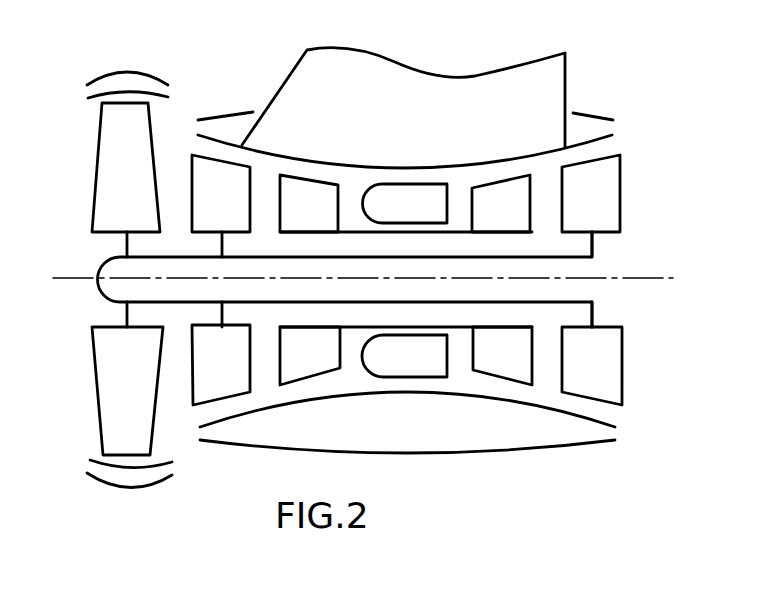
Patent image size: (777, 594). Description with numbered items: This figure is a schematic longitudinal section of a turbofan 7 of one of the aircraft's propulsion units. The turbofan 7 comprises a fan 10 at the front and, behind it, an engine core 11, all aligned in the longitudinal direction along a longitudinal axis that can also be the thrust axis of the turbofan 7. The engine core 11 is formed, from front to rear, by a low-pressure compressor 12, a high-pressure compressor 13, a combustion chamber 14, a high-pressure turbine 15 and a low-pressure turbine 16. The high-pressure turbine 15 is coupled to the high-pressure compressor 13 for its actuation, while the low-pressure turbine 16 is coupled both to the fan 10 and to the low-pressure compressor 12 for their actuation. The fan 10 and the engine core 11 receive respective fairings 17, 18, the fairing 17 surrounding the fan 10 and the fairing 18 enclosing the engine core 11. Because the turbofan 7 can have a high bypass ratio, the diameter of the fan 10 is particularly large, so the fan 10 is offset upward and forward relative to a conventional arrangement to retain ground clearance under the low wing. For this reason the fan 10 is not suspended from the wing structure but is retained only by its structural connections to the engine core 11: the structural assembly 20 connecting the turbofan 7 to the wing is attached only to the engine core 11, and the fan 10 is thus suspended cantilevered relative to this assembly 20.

The turbofan 7 is at (558, 474).
The fan 10 is at (113, 158).
The engine core 11 is at (423, 395).
The low-pressure compressor 12 is at (222, 182).
The high-pressure compressor 13 is at (312, 200).
The combustion chamber 14 is at (408, 197).
The high-pressure turbine 15 is at (505, 195).
The low-pressure turbine 16 is at (608, 190).
The fairing 17 is at (127, 73).
The fairing 18 is at (507, 452).
The structural assembly 20 is at (295, 83).